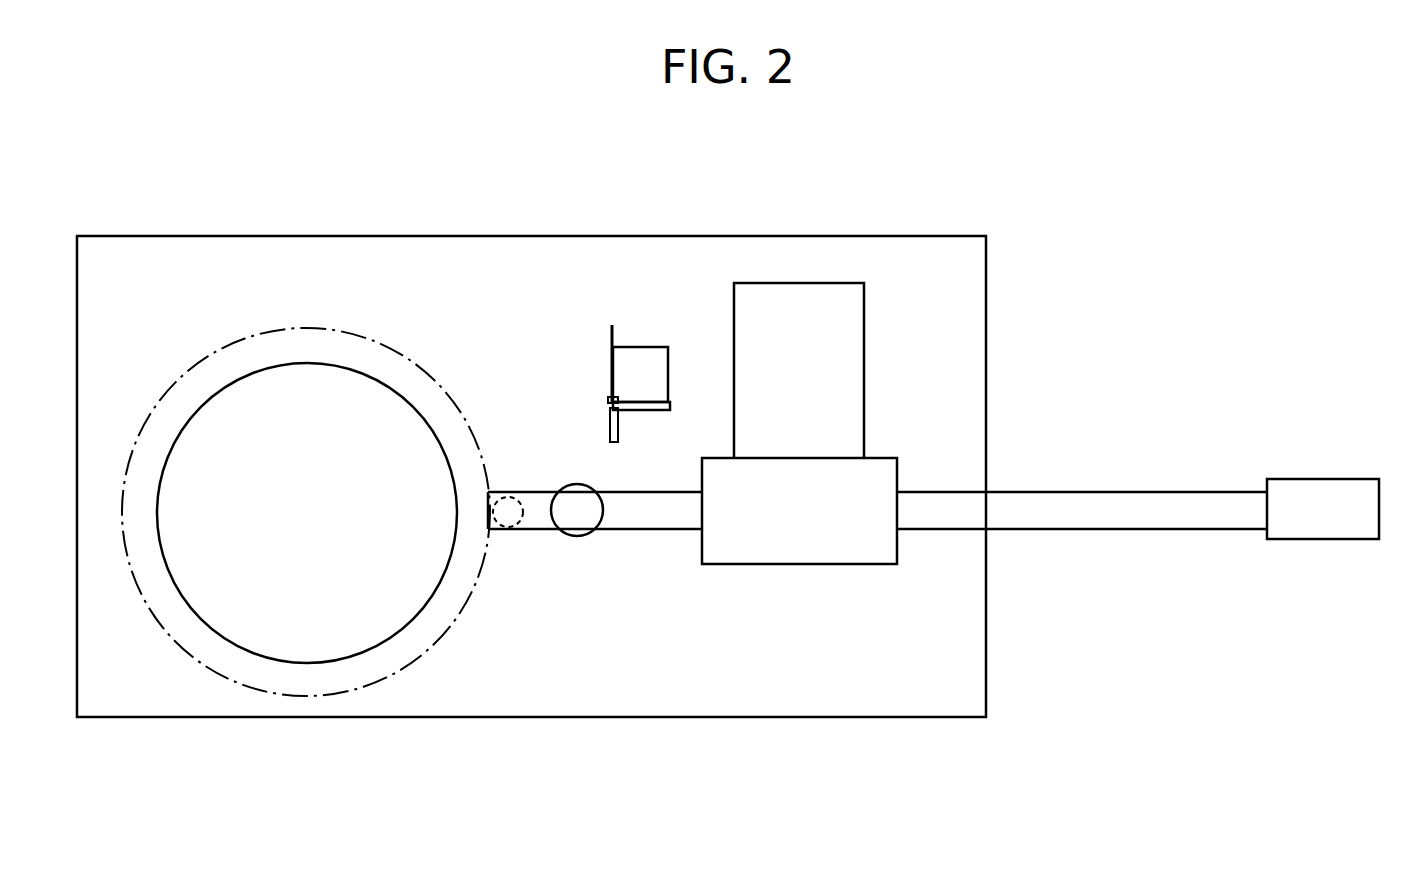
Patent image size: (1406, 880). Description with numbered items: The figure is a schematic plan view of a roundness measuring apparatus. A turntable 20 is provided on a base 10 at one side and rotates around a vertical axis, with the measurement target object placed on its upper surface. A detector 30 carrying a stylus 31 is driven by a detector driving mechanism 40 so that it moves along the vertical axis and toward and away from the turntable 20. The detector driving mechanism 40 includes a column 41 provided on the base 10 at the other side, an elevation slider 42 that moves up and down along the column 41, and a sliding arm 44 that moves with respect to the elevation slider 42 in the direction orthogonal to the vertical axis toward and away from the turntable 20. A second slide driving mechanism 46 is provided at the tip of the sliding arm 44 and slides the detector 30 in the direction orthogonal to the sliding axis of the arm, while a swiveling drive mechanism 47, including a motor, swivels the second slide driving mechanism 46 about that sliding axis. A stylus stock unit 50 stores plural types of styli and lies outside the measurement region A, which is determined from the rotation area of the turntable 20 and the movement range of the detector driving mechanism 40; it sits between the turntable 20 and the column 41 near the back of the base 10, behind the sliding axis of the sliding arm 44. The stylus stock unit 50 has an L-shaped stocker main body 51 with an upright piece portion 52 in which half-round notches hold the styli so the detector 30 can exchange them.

The base 10 is at (481, 716).
The turntable 20 is at (204, 428).
The measurement region A is at (223, 344).
The detector 30 is at (522, 487).
The stylus 31 is at (611, 375).
The detector driving mechanism 40 is at (1036, 204).
The column 41 is at (864, 322).
The elevation slider 42 is at (888, 474).
The sliding arm 44 is at (1127, 525).
The second slide driving mechanism 46 is at (579, 528).
The swiveling drive mechanism 47 is at (1313, 533).
The stylus stock unit 50 is at (629, 368).
The stocker main body 51 is at (666, 373).
The upright piece portion 52 is at (652, 411).